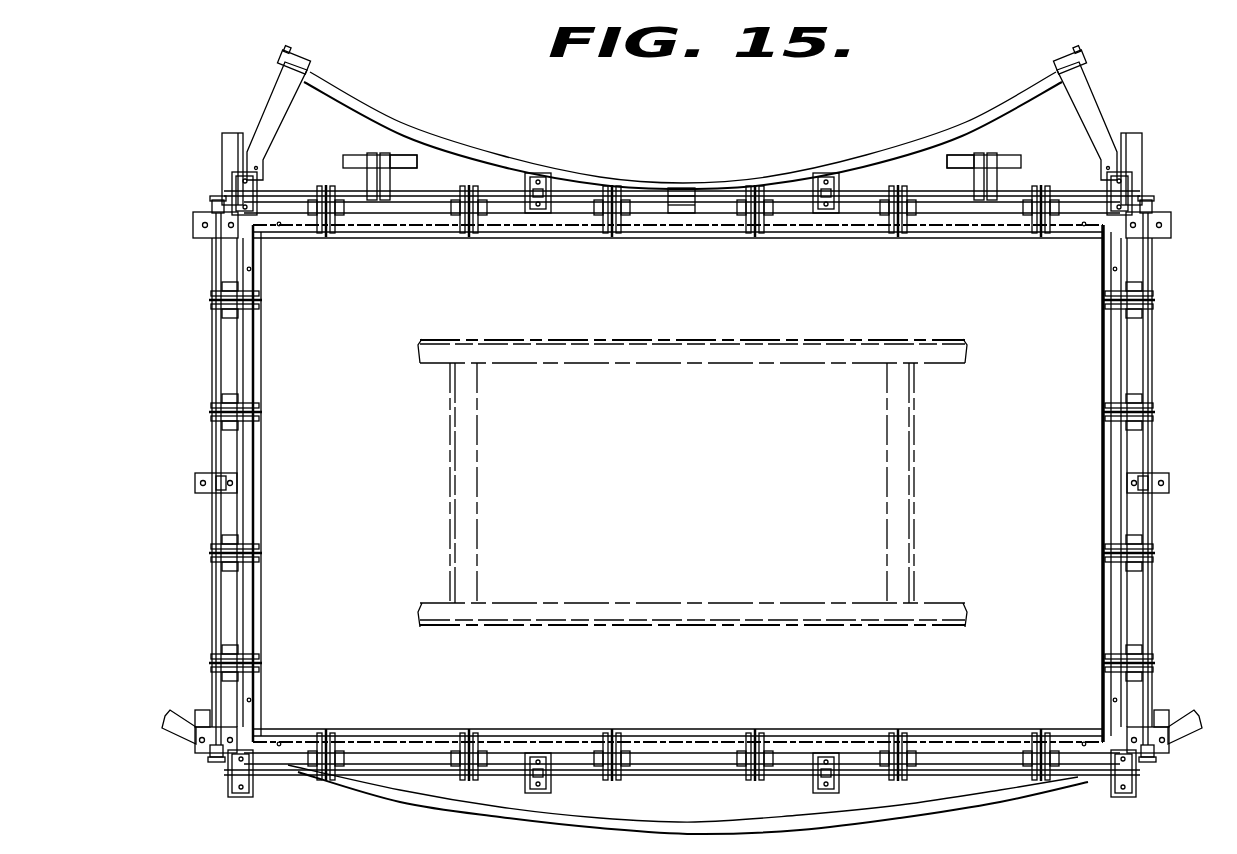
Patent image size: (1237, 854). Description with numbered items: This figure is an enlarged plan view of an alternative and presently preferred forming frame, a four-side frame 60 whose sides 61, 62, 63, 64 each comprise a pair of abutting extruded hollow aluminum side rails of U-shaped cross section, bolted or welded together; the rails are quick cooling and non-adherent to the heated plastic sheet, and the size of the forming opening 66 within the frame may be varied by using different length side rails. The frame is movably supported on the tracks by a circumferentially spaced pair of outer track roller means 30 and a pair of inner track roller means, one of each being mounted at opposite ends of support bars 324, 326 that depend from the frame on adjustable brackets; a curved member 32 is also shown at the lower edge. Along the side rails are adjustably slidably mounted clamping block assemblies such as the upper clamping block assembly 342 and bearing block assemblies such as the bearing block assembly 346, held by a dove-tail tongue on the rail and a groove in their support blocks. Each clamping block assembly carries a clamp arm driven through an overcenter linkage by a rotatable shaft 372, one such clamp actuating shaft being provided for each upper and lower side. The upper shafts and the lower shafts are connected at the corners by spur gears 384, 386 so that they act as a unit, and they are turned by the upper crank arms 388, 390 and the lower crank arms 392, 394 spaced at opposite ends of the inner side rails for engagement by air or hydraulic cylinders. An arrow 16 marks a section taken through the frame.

The section line indicator 16 is at (1236, 452).
The outer track roller means 30 is at (1003, 100).
The lower curved bow member 32 is at (357, 806).
The four-side frame 60 is at (183, 235).
The side of the frame 61 is at (416, 224).
The side of the frame 62 is at (1112, 370).
The side of the frame 63 is at (700, 740).
The side of the frame 64 is at (247, 448).
The forming opening 66 is at (690, 492).
The support bar 324 is at (277, 102).
The support bar 326 is at (1108, 116).
The upper clamping block assembly 342 is at (253, 545).
The bearing block assembly 346 is at (195, 487).
The rotatable shaft 372 is at (953, 197).
The spur gear 384 is at (208, 207).
The spur gear 386 is at (228, 183).
The upper crank arm 388 is at (407, 158).
The upper crank arm 390 is at (958, 158).
The lower crank arm 392 is at (345, 160).
The lower crank arm 394 is at (1017, 158).